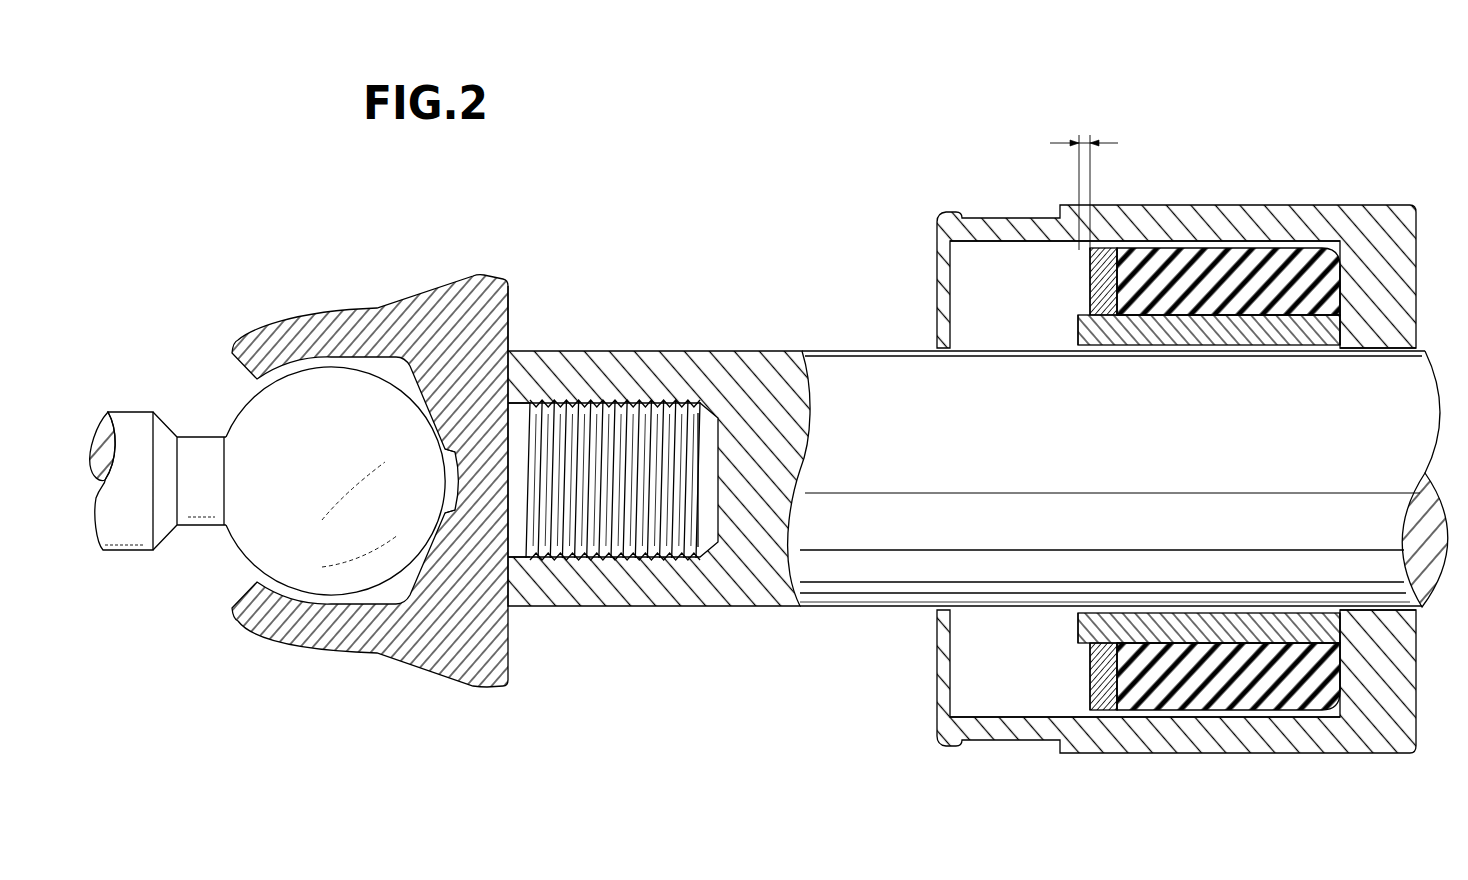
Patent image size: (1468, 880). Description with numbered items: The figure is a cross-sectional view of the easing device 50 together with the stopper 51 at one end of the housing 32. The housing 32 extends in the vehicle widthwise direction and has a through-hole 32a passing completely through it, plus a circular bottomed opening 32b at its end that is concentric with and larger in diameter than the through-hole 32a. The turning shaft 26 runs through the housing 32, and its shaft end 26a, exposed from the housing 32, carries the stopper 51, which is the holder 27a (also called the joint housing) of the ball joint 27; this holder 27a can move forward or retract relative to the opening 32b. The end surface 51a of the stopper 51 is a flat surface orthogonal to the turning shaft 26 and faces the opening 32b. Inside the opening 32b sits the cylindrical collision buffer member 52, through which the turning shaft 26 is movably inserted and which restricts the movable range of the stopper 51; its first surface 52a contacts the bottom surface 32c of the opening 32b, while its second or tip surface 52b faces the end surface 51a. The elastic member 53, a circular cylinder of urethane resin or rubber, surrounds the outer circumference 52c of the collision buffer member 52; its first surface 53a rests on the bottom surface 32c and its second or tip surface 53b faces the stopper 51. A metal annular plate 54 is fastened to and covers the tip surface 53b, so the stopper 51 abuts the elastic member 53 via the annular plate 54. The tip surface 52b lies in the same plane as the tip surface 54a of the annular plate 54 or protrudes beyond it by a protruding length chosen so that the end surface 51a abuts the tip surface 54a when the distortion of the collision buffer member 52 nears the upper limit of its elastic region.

The ball joint 27 is at (262, 320).
The holder 27a is at (404, 454).
The stopper 51 is at (404, 454).
The end surface 51a is at (512, 311).
The turning shaft 26 is at (962, 473).
The shaft end 26a is at (477, 597).
The easing device 50 is at (1145, 390).
The housing 32 is at (1176, 440).
The through-hole 32a is at (1378, 349).
The opening 32b is at (1000, 247).
The bottom surface 32c is at (1302, 249).
The collision buffer member 52 is at (1185, 479).
The first surface 52a is at (1330, 346).
The second surface 52b is at (1080, 332).
The outer circumference 52c is at (1165, 322).
The elastic member 53 is at (1236, 418).
The first surface 53a is at (1342, 310).
The second surface 53b is at (1112, 298).
The annular plate 54 is at (1070, 438).
The tip surface 54a is at (1089, 270).